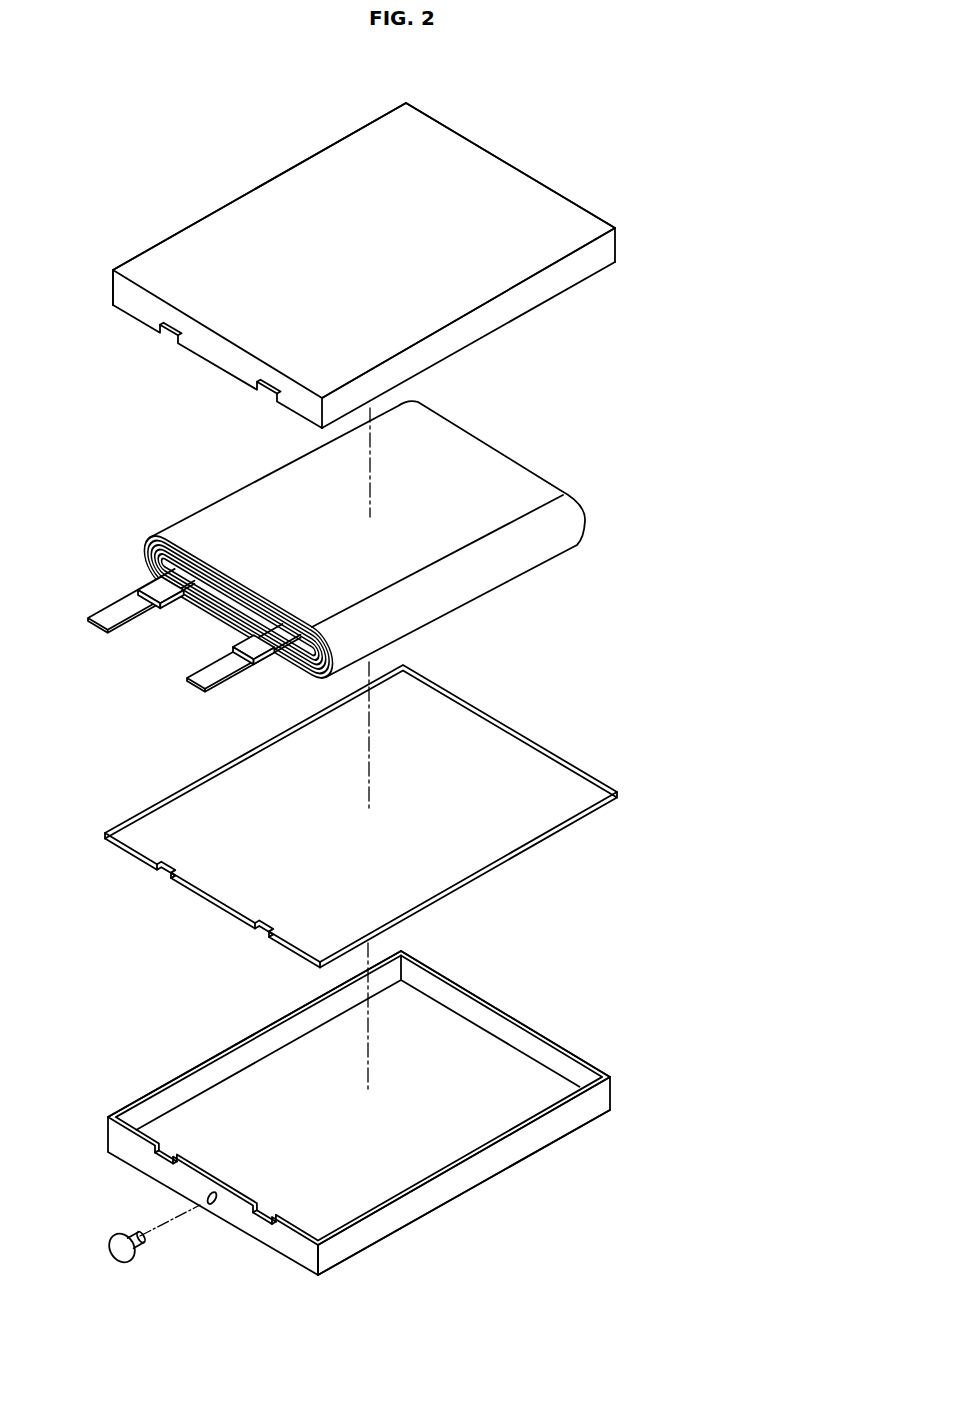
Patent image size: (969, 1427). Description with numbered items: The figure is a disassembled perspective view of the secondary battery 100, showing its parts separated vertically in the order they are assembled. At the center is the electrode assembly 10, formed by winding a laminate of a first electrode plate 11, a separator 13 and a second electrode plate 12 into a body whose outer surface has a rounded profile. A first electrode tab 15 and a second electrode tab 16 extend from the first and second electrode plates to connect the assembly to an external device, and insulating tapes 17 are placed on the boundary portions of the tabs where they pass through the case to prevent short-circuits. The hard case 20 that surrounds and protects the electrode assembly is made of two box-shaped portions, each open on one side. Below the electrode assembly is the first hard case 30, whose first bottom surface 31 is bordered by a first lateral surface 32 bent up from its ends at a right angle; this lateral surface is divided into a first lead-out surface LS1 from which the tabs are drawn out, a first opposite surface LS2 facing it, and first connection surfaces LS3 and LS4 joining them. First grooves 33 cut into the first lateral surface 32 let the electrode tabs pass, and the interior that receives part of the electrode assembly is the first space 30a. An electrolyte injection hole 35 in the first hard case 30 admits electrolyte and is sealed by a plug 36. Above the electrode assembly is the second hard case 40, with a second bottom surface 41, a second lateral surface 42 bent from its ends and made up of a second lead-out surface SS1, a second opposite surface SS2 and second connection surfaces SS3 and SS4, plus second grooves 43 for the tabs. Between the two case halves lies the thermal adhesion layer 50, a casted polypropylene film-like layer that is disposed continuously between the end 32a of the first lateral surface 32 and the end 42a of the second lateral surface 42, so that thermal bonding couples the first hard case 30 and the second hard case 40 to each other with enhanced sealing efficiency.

The secondary battery 100 is at (640, 116).
The electrode assembly 10 is at (316, 544).
The first electrode plate 11 is at (152, 547).
The second electrode plate 12 is at (204, 607).
The separator 13 is at (145, 557).
The first electrode tab 15 is at (190, 683).
The second electrode tab 16 is at (92, 622).
The insulating tape 17 is at (170, 605).
The hard case 20 is at (708, 455).
The first hard case 30 is at (392, 1104).
The first space 30a is at (498, 1110).
The first bottom surface 31 is at (427, 1020).
The first lateral surface 32 is at (417, 1202).
The end of the first lateral surface 32a is at (475, 1157).
The first grooves 33 is at (157, 1157).
The electrolyte injection hole 35 is at (205, 1205).
The plug 36 is at (112, 1254).
The second hard case 40 is at (382, 285).
The second bottom surface 41 is at (475, 160).
The second lateral surface 42 is at (552, 278).
The end of the second lateral surface 42a is at (523, 318).
The second grooves 43 is at (263, 394).
The thermal adhesion layer 50 is at (493, 733).
The second lead-out surface SS1 is at (140, 310).
The second opposite surface SS2 is at (578, 207).
The second connection surface SS3 is at (262, 185).
The second connection surface SS4 is at (607, 285).
The first lead-out surface LS1 is at (293, 1250).
The first opposite surface LS2 is at (503, 1027).
The first connection surface LS3 is at (213, 1067).
The first connection surface LS4 is at (370, 1235).